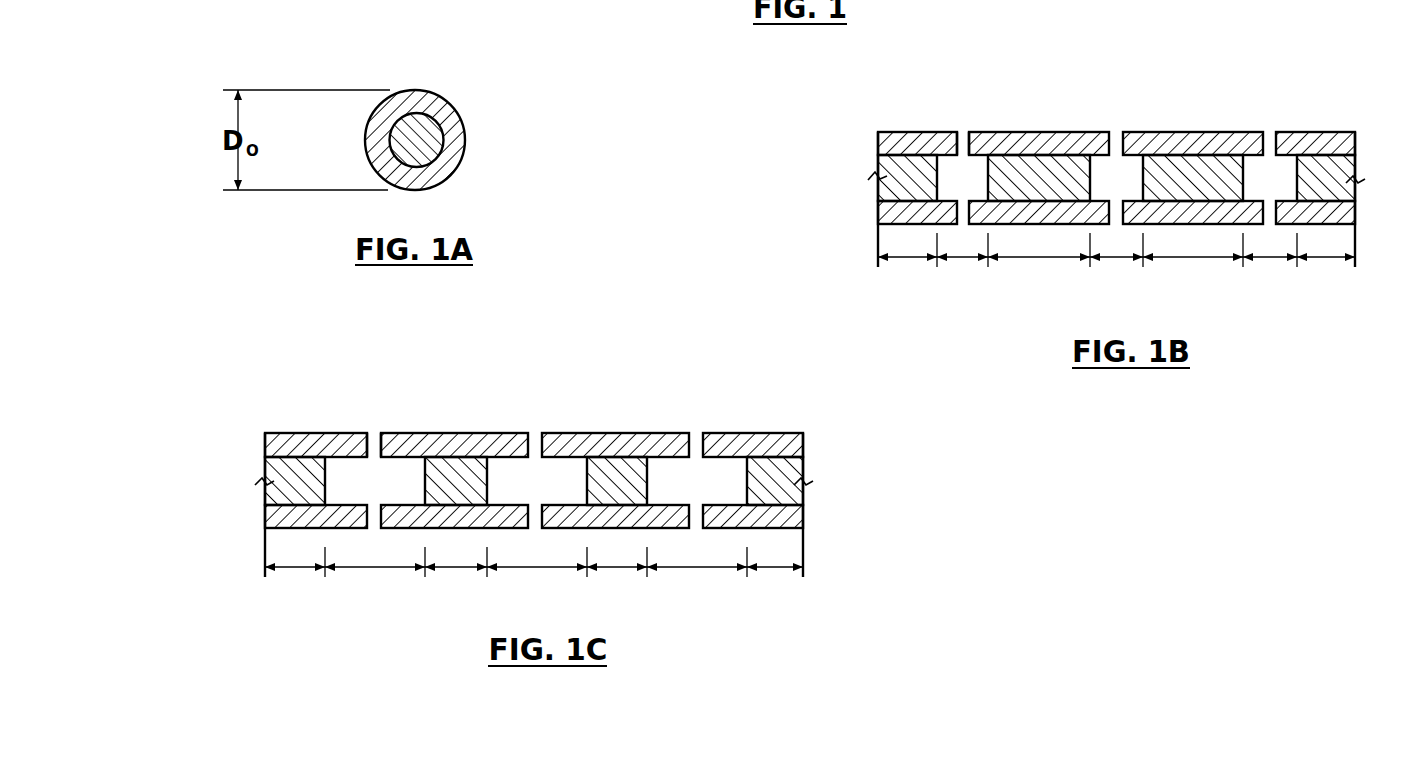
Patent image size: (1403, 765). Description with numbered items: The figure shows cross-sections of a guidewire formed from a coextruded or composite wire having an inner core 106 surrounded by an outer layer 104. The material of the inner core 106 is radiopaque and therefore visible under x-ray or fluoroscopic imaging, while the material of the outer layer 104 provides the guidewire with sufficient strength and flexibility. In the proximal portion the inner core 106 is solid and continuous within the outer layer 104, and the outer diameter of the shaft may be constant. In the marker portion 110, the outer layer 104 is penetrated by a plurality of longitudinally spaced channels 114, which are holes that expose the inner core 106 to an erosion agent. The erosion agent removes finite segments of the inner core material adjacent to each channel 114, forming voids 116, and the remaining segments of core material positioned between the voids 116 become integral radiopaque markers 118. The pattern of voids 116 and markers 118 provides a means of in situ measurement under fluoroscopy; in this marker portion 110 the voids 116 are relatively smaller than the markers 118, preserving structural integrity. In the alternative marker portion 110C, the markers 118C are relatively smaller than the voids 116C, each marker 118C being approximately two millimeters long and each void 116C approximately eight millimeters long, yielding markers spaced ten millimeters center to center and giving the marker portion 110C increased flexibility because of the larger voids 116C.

In FIG. 1A, the outer layer 104 is at (456, 122).
In FIG. 1B, the outer layer 104 is at (1003, 143).
In FIG. 1C, the outer layer 104 is at (413, 442).
In FIG. 1A, the inner core 106 is at (425, 143).
In FIG. 1B, the inner core 106 is at (1055, 170).
In FIG. 1C, the inner core 106 is at (467, 470).
In FIG. 1B, the marker portion 110 is at (1216, 79).
In FIG. 1C, the marker portion 110C is at (688, 363).
In FIG. 1B, the channels 114 is at (963, 140).
In FIG. 1C, the channels 114 is at (374, 438).
In FIG. 1B, the voids 116 is at (1117, 274).
In FIG. 1C, the voids 116C is at (536, 587).
In FIG. 1B, the integral radiopaque markers 118 is at (1116, 262).
In FIG. 1C, the radiopaque markers 118C is at (536, 577).